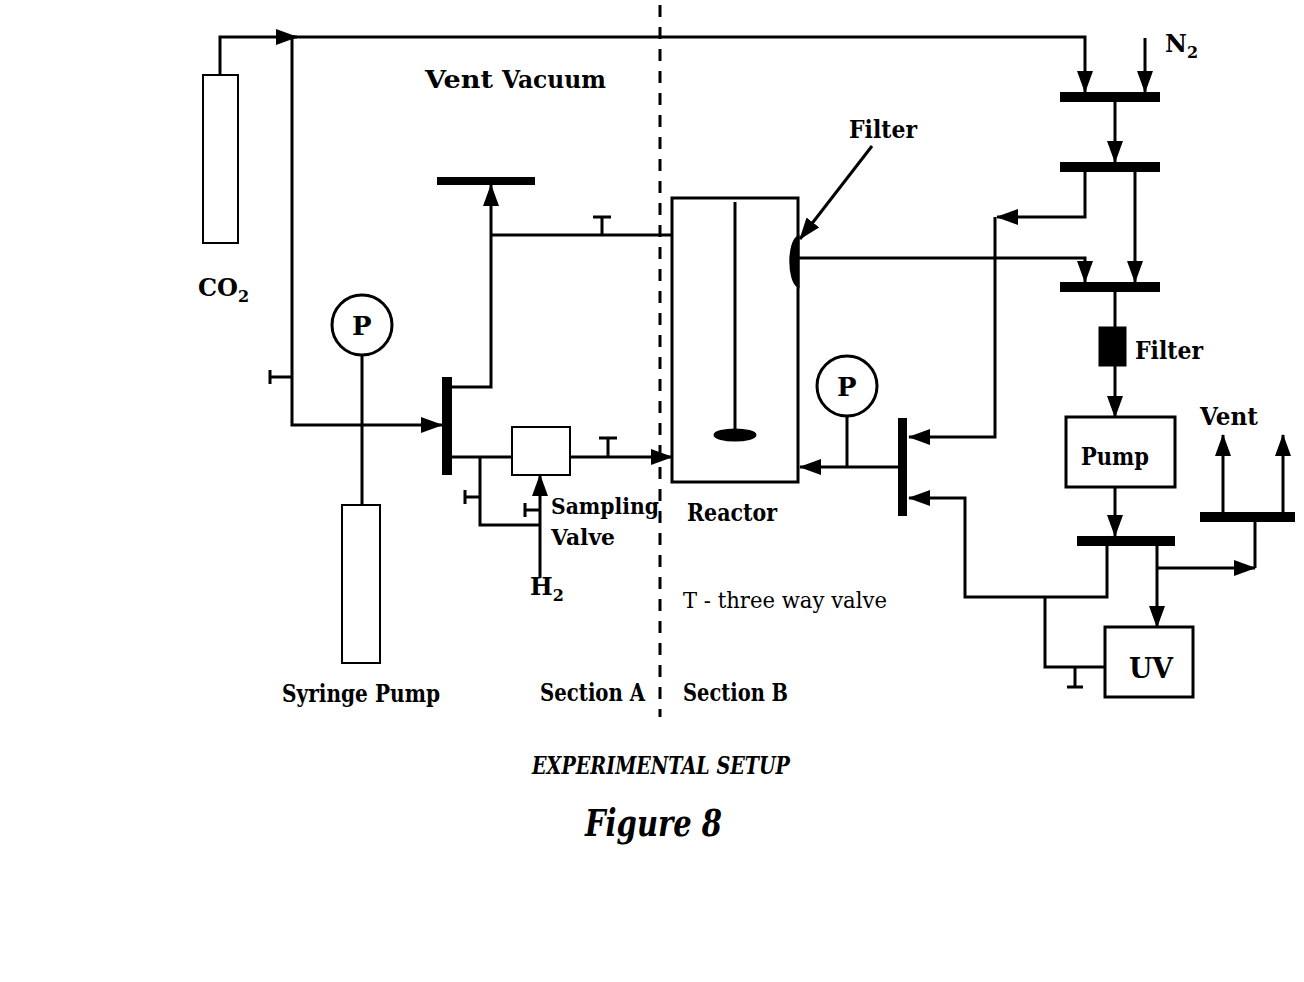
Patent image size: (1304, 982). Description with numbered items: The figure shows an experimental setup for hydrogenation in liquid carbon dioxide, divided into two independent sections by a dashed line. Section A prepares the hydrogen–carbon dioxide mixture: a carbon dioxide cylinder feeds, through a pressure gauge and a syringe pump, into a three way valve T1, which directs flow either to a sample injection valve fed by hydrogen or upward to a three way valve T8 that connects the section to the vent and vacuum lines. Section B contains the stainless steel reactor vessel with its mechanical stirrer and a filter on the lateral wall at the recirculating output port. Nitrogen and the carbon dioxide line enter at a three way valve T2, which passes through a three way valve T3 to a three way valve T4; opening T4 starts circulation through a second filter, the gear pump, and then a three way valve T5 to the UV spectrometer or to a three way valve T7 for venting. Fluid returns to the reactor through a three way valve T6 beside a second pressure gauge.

The three way valve T1 is at (450, 410).
The three way valve T2 is at (1127, 96).
The three way valve T3 is at (1127, 166).
The three way valve T4 is at (1127, 286).
The three way valve T5 is at (1107, 541).
The three way valve T6 is at (903, 481).
The three way valve T7 is at (1251, 533).
The three way valve T8 is at (503, 176).